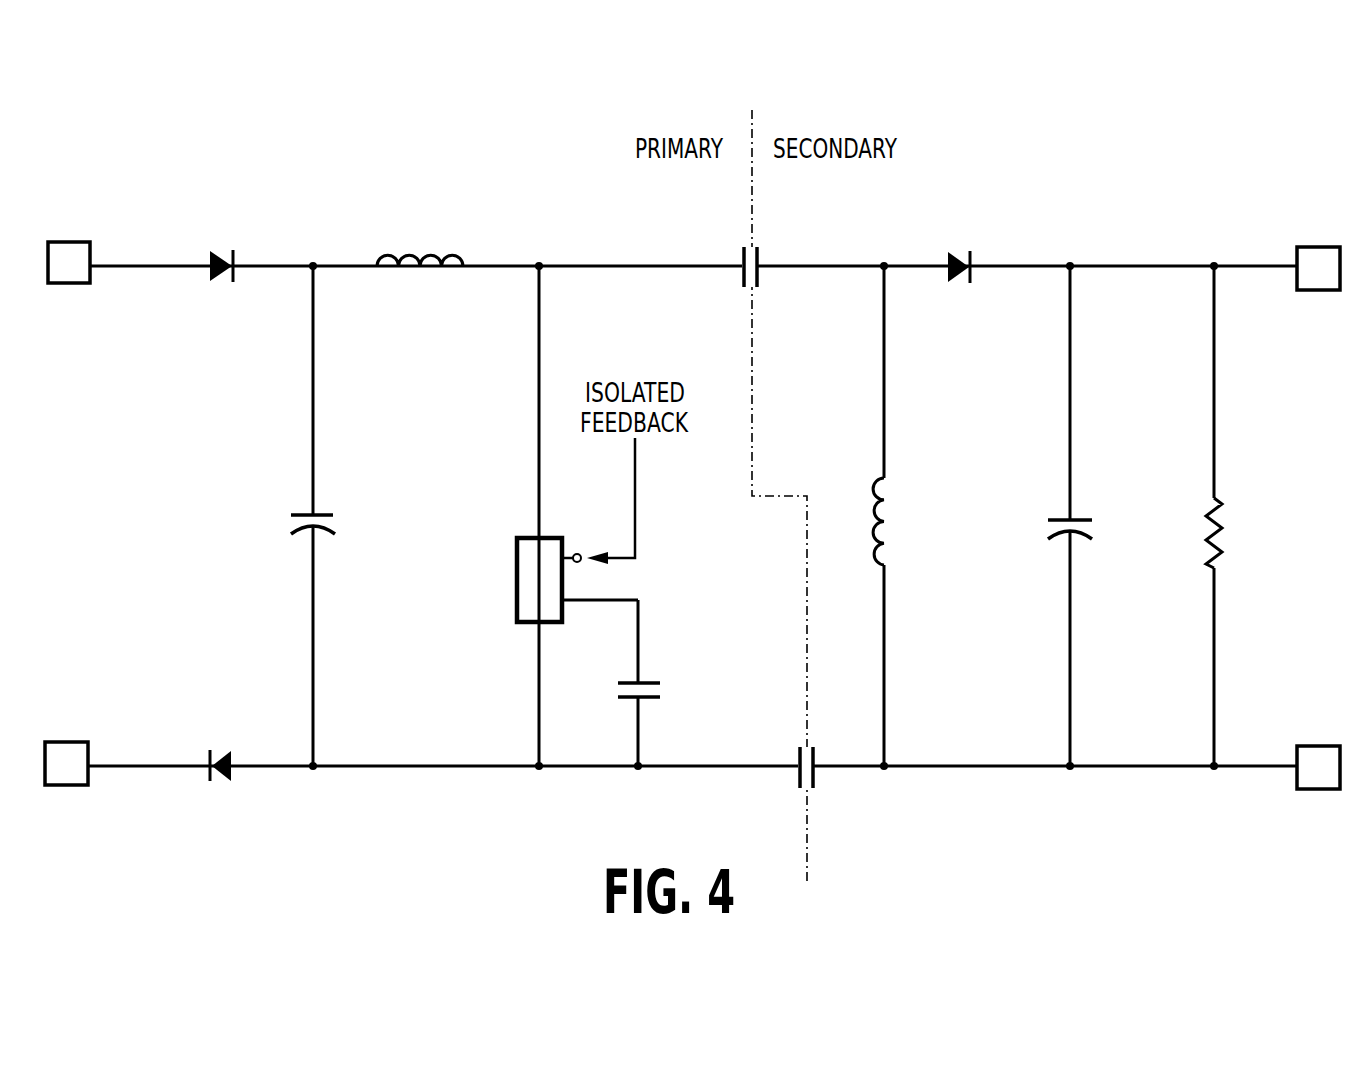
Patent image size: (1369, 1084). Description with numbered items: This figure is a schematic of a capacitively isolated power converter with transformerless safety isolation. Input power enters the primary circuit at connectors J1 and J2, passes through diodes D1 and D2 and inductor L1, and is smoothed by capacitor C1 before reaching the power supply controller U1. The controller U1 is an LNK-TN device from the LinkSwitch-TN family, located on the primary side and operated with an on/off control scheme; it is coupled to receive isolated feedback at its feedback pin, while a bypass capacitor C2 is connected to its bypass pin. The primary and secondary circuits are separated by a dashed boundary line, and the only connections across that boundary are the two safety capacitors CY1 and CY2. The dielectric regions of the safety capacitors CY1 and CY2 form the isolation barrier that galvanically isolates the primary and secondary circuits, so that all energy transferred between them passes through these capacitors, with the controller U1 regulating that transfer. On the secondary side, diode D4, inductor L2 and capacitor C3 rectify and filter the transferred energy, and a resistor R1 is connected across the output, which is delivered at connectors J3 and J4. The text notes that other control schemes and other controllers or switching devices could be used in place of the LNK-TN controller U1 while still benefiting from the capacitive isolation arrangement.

The input connector J1 is at (84, 240).
The input connector J2 is at (83, 742).
The output connector J3 is at (1305, 250).
The output connector J4 is at (1305, 748).
The diode D1 is at (214, 241).
The diode D2 is at (210, 741).
The diode D4 is at (950, 245).
The inductor L1 is at (420, 233).
The inductor L2 is at (906, 521).
The capacitor C1 is at (284, 514).
The capacitor C2 is at (669, 683).
The capacitor C3 is at (1100, 509).
The safety capacitor CY1 is at (751, 245).
The safety capacitor CY2 is at (811, 747).
The power supply controller U1 is at (509, 572).
The load resistor R1 is at (1239, 524).